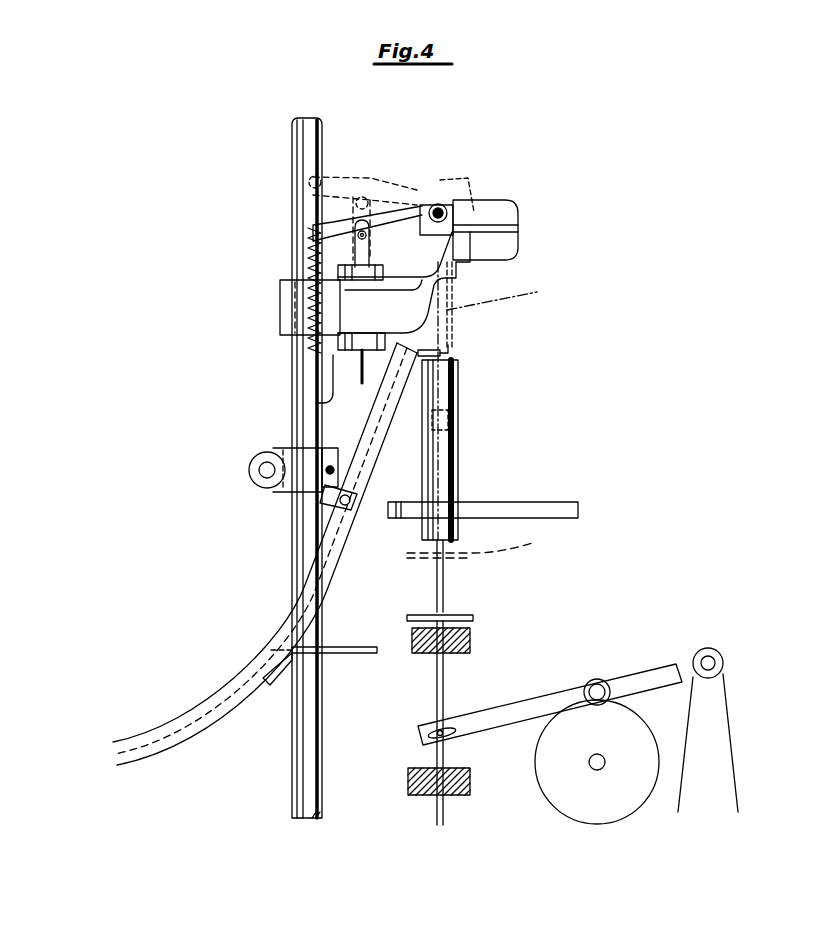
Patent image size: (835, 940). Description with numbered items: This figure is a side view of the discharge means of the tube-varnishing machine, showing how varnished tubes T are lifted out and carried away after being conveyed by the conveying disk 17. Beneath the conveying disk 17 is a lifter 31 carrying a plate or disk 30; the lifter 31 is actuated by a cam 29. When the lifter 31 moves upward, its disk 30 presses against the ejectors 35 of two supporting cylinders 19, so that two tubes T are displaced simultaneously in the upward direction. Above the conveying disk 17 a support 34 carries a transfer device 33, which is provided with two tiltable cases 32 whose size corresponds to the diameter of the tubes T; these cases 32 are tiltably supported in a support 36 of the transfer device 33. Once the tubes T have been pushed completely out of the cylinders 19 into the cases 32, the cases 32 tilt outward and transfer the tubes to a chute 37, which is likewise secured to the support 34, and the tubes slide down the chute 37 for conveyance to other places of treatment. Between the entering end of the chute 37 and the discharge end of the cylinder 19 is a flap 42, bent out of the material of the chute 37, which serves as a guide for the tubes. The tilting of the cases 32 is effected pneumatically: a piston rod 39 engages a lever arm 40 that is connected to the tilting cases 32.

The conveying disk 17 is at (502, 507).
The supporting cylinders 19 is at (460, 438).
The cam 29 is at (567, 795).
The plate or disk 30 is at (475, 620).
The lifter 31 is at (445, 687).
The tiltable cases 32 is at (454, 270).
The transfer device 33 is at (470, 191).
The support 34 is at (302, 355).
The ejectors 35 is at (445, 597).
The support of the transfer device 36 is at (503, 208).
The chute 37 is at (363, 458).
The piston rod 39 is at (370, 253).
The lever arm 40 is at (345, 180).
The flap 42 is at (440, 352).
The tubes T is at (500, 297).